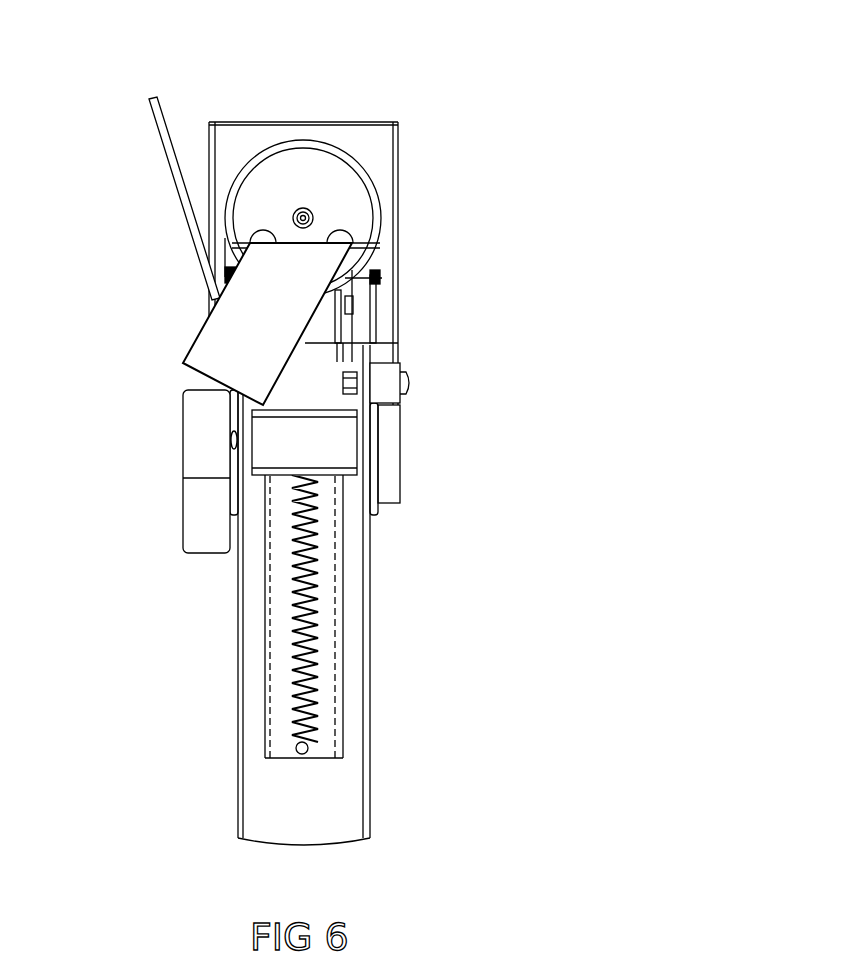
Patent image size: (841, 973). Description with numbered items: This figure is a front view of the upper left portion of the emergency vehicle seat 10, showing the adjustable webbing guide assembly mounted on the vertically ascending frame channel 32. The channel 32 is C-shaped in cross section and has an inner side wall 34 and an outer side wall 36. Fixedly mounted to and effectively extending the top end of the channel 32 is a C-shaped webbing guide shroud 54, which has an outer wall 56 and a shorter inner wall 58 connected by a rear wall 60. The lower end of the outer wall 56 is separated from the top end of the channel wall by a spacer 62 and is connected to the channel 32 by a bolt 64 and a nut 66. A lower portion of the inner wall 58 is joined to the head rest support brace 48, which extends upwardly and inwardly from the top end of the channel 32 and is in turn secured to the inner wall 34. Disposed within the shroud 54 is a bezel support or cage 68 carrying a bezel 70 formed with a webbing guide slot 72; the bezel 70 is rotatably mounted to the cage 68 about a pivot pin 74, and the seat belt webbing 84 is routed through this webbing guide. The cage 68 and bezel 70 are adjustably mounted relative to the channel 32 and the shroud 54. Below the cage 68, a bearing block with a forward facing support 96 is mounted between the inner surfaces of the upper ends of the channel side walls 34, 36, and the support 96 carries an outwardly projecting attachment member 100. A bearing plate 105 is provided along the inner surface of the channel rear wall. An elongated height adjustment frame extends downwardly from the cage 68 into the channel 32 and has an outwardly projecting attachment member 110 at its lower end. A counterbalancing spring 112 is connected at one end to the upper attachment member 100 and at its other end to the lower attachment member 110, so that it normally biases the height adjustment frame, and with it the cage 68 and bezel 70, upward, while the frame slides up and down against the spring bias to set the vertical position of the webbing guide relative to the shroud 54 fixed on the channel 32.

The emergency vehicle seat 10 is at (323, 540).
The side channel 32 is at (332, 614).
The inner side wall 34 is at (238, 815).
The outer side wall 36 is at (372, 802).
The head rest support brace 48 is at (147, 115).
The webbing guide shroud 54 is at (333, 221).
The outer wall 56 is at (399, 130).
The inner wall 58 is at (208, 128).
The rear wall 60 is at (227, 143).
The spacer 62 is at (382, 378).
The bolt 64 is at (408, 383).
The nut 66 is at (343, 383).
The bezel support or cage 68 is at (320, 158).
The bezel 70 is at (312, 165).
The webbing guide slot 72 is at (258, 236).
The pivot pin 74 is at (309, 209).
The seat belt webbing 84 is at (218, 357).
The forward facing support 96 is at (268, 443).
The attachment member 100 is at (288, 472).
The bearing plate 105 is at (302, 808).
The attachment member 110 is at (298, 751).
The counterbalancing spring 112 is at (318, 577).